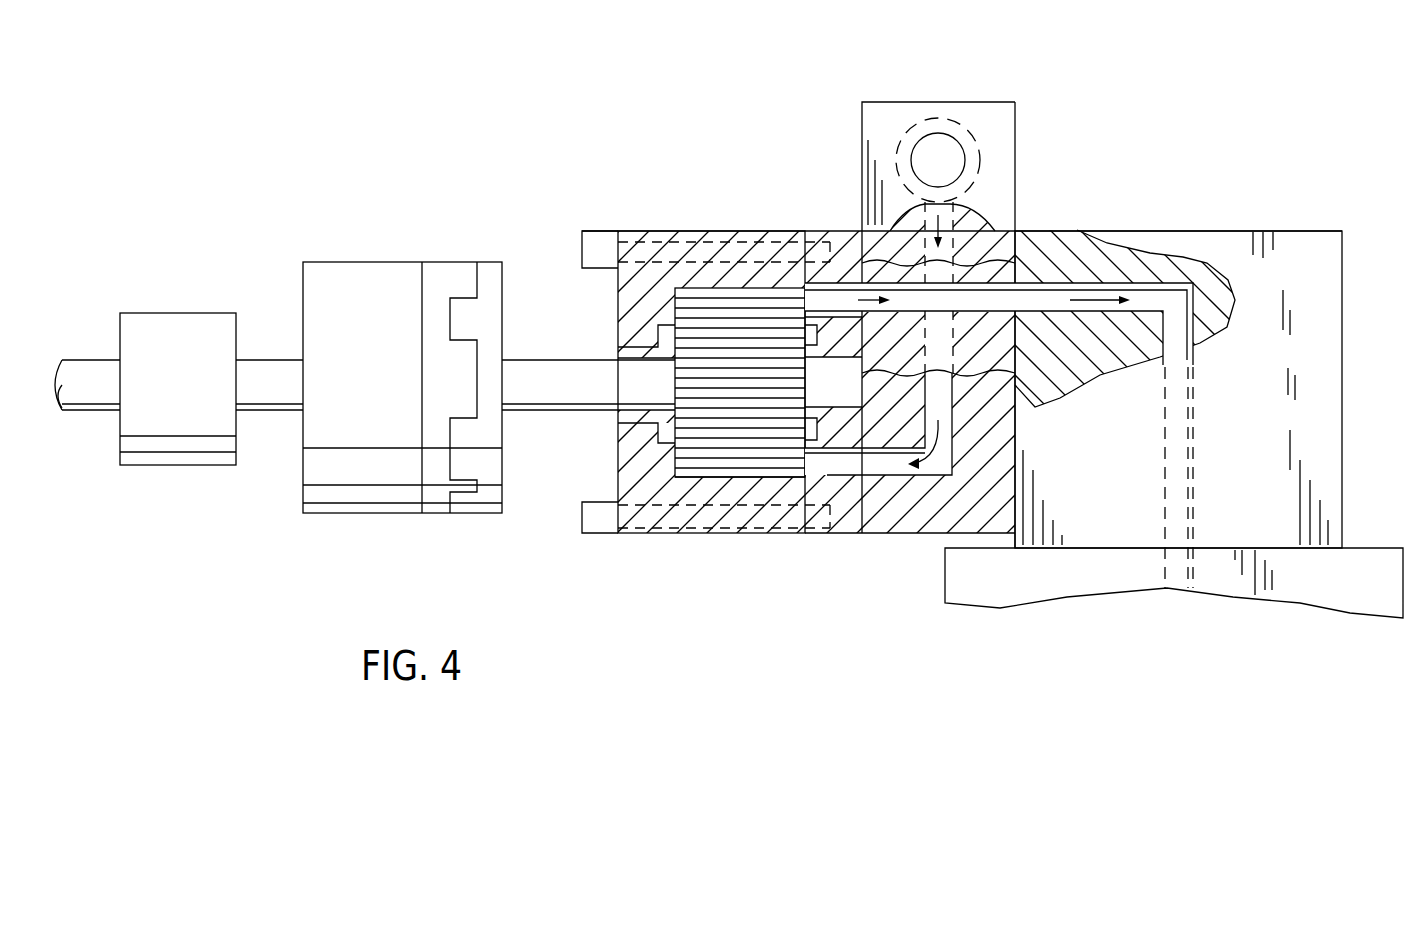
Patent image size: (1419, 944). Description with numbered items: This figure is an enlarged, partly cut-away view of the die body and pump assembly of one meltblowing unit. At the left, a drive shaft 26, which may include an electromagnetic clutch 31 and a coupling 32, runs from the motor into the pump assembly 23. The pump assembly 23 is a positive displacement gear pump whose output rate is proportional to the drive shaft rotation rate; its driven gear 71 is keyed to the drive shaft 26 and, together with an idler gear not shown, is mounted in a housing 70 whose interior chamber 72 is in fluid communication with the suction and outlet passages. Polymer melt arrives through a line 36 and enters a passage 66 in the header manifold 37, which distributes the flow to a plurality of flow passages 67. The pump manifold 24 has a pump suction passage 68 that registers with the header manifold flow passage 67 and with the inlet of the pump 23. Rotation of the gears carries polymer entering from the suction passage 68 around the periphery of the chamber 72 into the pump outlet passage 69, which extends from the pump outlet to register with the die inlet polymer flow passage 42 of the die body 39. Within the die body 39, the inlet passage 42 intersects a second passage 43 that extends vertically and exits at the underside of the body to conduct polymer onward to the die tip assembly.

The pump assembly 23 is at (683, 233).
The pump manifold 24 is at (862, 232).
The drive shaft 26 is at (568, 358).
The electromagnetic clutch 31 is at (370, 262).
The coupling 32 is at (170, 312).
The polymer melt line 36 is at (965, 148).
The header manifold 37 is at (860, 122).
The die body 39 is at (1315, 385).
The die inlet polymer flow passage 42 is at (1053, 288).
The vertical polymer flow passage 43 is at (1177, 430).
The header manifold passage 66 is at (933, 118).
The flow passage 67 is at (942, 215).
The pump suction passage 68 is at (938, 388).
The pump outlet passage 69 is at (978, 298).
The housing 70 is at (655, 533).
The driven gear 71 is at (733, 420).
The interior chamber 72 is at (780, 468).